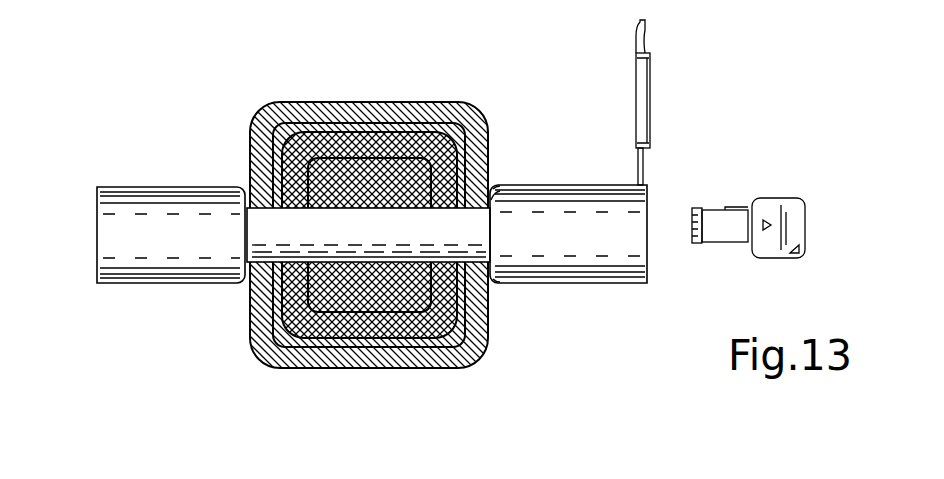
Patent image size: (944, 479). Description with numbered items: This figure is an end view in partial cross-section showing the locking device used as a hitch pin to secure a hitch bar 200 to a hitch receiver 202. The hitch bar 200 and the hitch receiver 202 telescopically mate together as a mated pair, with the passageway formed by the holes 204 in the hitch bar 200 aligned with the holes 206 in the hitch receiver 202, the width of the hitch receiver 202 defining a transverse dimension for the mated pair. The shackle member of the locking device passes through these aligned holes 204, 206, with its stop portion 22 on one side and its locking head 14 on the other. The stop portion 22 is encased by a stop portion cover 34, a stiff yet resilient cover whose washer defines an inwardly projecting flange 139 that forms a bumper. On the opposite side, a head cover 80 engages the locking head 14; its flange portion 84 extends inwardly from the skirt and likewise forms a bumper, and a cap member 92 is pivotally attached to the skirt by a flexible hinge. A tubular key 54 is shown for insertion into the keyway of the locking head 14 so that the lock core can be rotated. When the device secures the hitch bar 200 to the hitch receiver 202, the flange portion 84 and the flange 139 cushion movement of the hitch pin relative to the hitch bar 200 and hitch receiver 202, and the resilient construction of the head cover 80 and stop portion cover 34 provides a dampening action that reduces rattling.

The locking head 14 is at (595, 270).
The stop portion 22 is at (133, 283).
The stop portion cover 34 is at (137, 198).
The tubular key 54 is at (736, 207).
The head cover 80 is at (527, 197).
The flange portion 84 is at (493, 187).
The cap member 92 is at (648, 90).
The flange 139 is at (247, 295).
The hitch bar 200 is at (342, 147).
The hitch receiver 202 is at (443, 103).
The holes 204 is at (310, 193).
The holes 206 is at (248, 170).